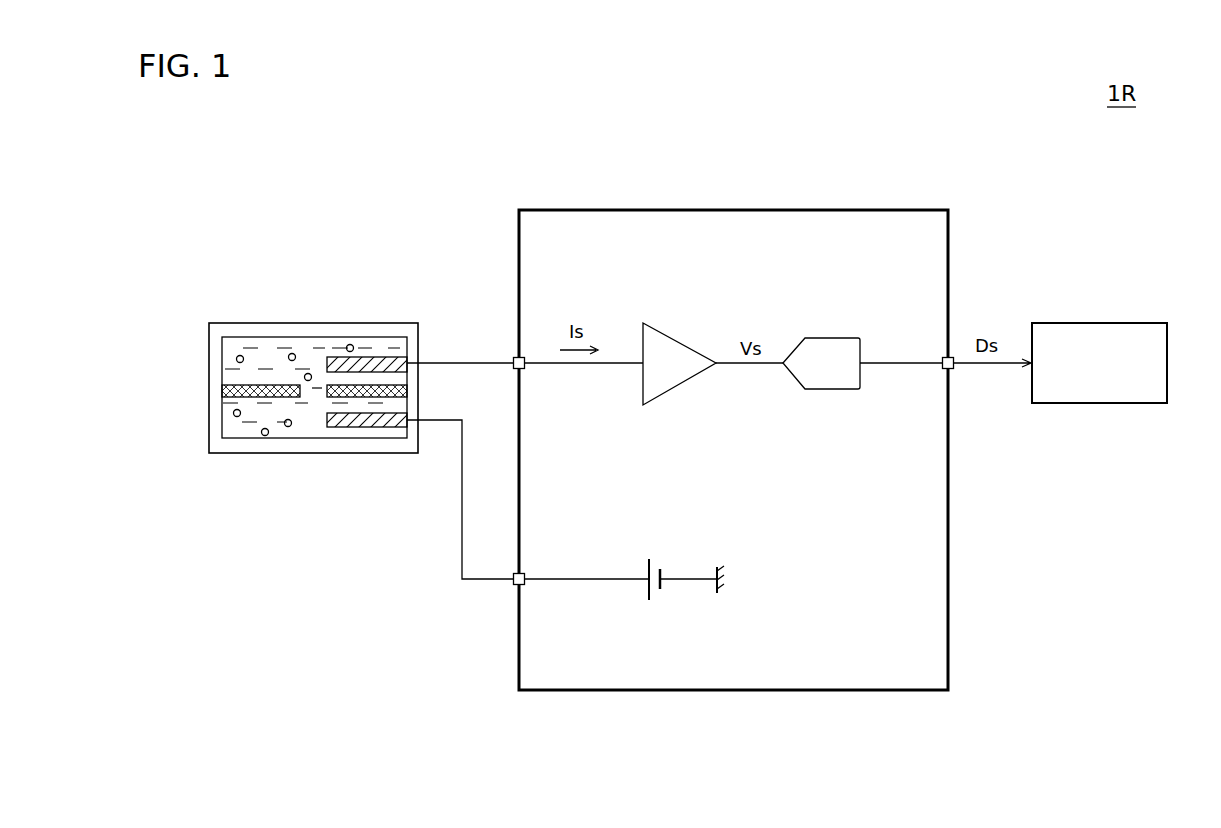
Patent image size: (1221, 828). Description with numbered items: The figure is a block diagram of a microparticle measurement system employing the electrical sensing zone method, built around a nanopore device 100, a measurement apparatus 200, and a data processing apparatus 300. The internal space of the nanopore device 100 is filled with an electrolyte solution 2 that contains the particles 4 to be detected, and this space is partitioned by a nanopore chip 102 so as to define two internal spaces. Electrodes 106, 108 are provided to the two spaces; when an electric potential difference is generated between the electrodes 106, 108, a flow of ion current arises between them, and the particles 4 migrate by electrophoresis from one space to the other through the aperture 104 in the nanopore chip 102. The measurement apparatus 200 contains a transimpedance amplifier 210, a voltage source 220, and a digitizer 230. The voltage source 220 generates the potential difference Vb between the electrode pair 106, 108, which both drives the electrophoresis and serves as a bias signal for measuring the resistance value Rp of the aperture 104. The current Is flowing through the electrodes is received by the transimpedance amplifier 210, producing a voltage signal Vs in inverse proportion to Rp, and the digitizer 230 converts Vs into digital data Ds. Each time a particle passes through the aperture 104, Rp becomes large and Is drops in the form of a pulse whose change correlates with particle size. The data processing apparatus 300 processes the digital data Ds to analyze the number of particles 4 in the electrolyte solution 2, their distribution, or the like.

The electrolyte solution 2 is at (262, 347).
The particles 4 is at (308, 373).
The nanopore device 100 is at (357, 322).
The nanopore chip 102 is at (223, 390).
The aperture 104 is at (319, 398).
The electrode 106 is at (387, 358).
The electrode 108 is at (378, 428).
The measurement apparatus 200 is at (795, 208).
The transimpedance amplifier 210 is at (680, 337).
The voltage source 220 is at (661, 558).
The digitizer 230 is at (830, 336).
The data processing apparatus 300 is at (1112, 320).